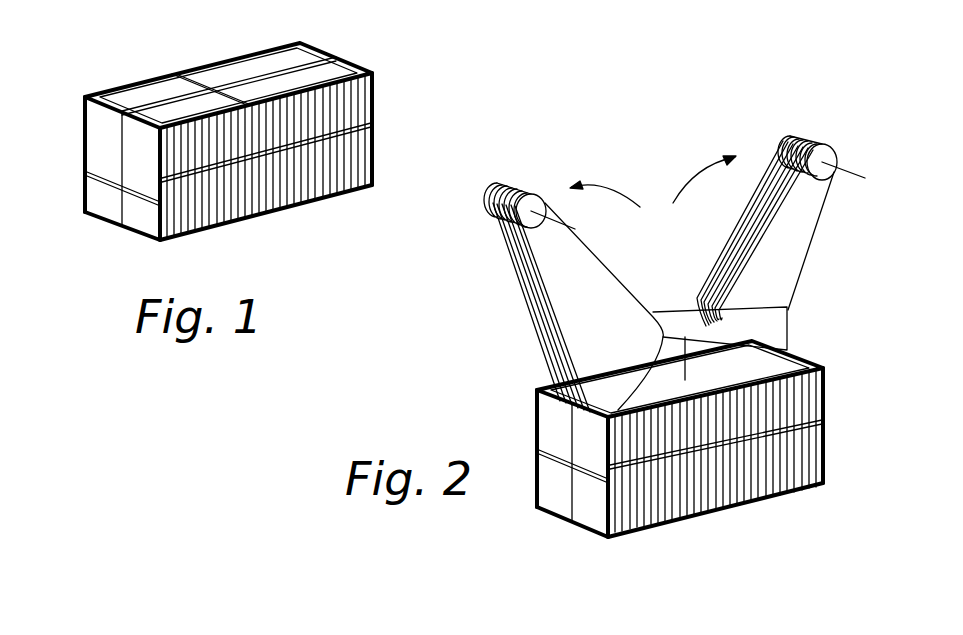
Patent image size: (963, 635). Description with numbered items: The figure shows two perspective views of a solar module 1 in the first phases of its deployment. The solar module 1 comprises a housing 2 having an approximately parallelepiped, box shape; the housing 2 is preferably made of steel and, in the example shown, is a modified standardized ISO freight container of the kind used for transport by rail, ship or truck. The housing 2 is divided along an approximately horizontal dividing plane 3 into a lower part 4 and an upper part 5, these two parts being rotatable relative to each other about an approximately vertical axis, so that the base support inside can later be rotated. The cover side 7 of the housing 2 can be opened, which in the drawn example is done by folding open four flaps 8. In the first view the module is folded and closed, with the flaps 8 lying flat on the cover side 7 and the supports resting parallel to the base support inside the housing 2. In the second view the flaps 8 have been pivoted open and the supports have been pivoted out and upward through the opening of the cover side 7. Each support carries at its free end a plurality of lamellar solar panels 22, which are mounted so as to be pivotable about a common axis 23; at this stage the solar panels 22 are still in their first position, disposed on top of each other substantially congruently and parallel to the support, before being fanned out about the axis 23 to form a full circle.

In FIG. 1, the solar module 1 is at (490, 39).
In FIG. 2, the solar module 1 is at (840, 307).
In FIG. 1, the housing 2 is at (110, 190).
In FIG. 2, the housing 2 is at (590, 502).
In FIG. 1, the dividing plane 3 is at (100, 158).
In FIG. 1, the lower part 4 is at (377, 157).
In FIG. 1, the upper part 5 is at (345, 100).
In FIG. 1, the cover side 7 is at (268, 63).
In FIG. 1, the flaps 8 is at (167, 112).
In FIG. 2, the flaps 8 is at (667, 363).
In FIG. 2, the solar panels 22 is at (562, 285).
In FIG. 2, the common axis 23 is at (485, 200).